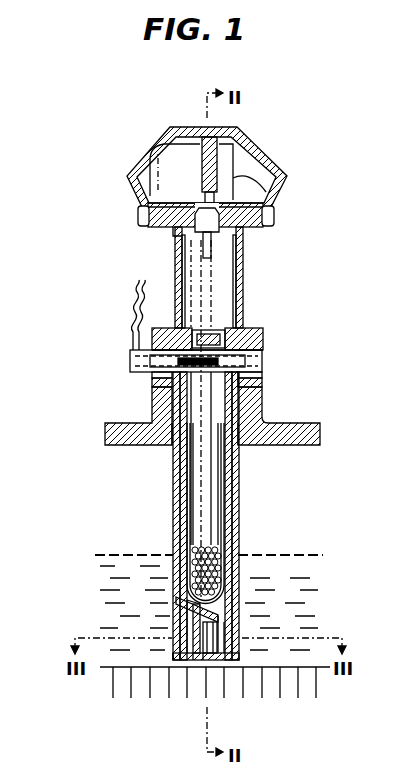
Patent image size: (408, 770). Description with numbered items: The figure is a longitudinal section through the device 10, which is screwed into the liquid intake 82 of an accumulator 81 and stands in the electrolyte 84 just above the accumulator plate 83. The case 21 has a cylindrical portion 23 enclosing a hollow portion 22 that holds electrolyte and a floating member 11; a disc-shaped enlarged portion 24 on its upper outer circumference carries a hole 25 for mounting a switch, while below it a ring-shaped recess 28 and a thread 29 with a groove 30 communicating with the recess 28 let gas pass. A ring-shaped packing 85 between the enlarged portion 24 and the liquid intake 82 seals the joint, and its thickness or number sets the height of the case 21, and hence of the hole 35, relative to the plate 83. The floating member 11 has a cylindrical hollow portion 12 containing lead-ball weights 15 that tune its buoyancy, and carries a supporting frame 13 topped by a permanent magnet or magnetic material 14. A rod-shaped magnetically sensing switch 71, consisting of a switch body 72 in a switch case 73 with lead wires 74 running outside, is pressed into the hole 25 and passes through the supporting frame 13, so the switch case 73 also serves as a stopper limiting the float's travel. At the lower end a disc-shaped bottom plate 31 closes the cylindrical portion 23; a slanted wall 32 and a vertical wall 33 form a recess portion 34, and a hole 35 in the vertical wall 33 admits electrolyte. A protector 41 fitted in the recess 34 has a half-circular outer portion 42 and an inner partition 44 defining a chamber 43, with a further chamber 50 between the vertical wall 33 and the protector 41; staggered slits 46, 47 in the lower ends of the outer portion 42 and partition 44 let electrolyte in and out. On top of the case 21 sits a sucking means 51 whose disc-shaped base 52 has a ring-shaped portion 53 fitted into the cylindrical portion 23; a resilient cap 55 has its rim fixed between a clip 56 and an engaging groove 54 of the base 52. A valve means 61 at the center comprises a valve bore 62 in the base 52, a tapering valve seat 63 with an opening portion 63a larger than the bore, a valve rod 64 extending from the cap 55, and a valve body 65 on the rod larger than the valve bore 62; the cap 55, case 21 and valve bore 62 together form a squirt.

The igniter assembly 10 is at (275, 146).
The sucking means 51 is at (214, 149).
The resilient cap 55 is at (137, 165).
The valve rod 64 is at (216, 152).
The valve bore 62 is at (236, 192).
The engaging groove 54 is at (150, 217).
The clip 56 is at (140, 210).
The base 52 is at (272, 222).
The tapering valve seat 63 is at (216, 228).
The opening portion 63a is at (203, 250).
The ring-shaped portion 53 is at (178, 232).
The valve means 61 is at (288, 298).
The valve body 65 is at (237, 268).
The supporting frame 13 is at (200, 397).
The permanent magnet or magnetic material 14 is at (216, 340).
The enlarged portion 24 is at (263, 335).
The hole 25 is at (263, 350).
The magnetically sensing switch 71 is at (168, 354).
The switch body 72 is at (131, 362).
The switch case 73 is at (166, 368).
The lead wires 74 is at (131, 305).
The recess 28 is at (263, 376).
The packing 85 is at (263, 383).
The accumulator 81 is at (202, 416).
The liquid intake 82 is at (263, 405).
The thread 29 is at (244, 428).
The groove 30 is at (246, 446).
The case 21 is at (177, 516).
The hollow portion 22 is at (176, 470).
The cylindrical portion 23 is at (184, 482).
The floating member 11 is at (223, 505).
The cylindrical hollow portion 12 is at (226, 520).
The weights 15 is at (212, 553).
The electrolyte 84 is at (295, 556).
The slanted wall 32 is at (240, 602).
The vertical wall 33 is at (240, 616).
The chamber 50 is at (240, 632).
The recess portion 34 is at (190, 600).
The protector 41 is at (186, 616).
The outer portion 42 is at (192, 632).
The chamber 43 is at (182, 660).
The partition 44 is at (195, 660).
The slit 46 is at (170, 657).
The slit 47 is at (202, 660).
The bottom plate 31 is at (240, 662).
The hole 35 is at (262, 662).
The plate 83 is at (318, 684).